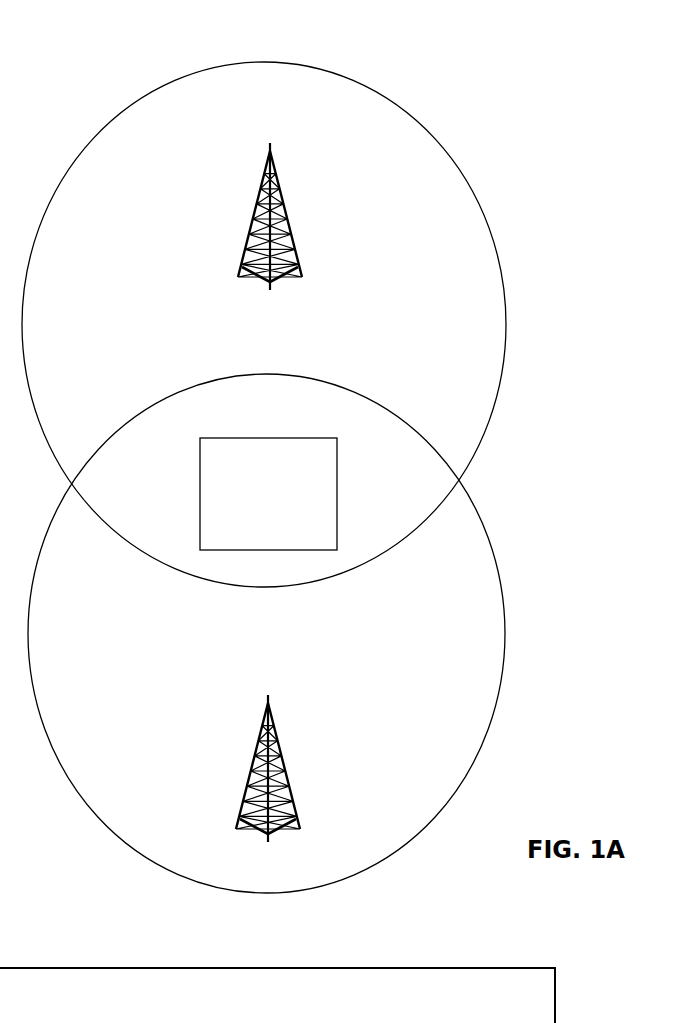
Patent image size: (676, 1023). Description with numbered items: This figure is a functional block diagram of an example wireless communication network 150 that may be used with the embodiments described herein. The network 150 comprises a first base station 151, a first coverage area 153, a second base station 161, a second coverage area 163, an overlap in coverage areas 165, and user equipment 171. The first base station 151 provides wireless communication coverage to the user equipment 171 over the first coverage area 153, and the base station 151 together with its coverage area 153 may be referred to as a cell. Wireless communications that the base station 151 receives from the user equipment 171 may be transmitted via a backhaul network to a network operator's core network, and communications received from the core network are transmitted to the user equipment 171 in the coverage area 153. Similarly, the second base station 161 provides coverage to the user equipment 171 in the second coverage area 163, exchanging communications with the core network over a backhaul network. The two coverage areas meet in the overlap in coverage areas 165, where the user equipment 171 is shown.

The wireless communication network 150 is at (432, 70).
The first base station 151 is at (273, 168).
The first coverage area 153 is at (470, 180).
The second base station 161 is at (272, 722).
The second coverage area 163 is at (502, 587).
The overlap in coverage areas 165 is at (395, 452).
The user equipment 171 is at (200, 503).